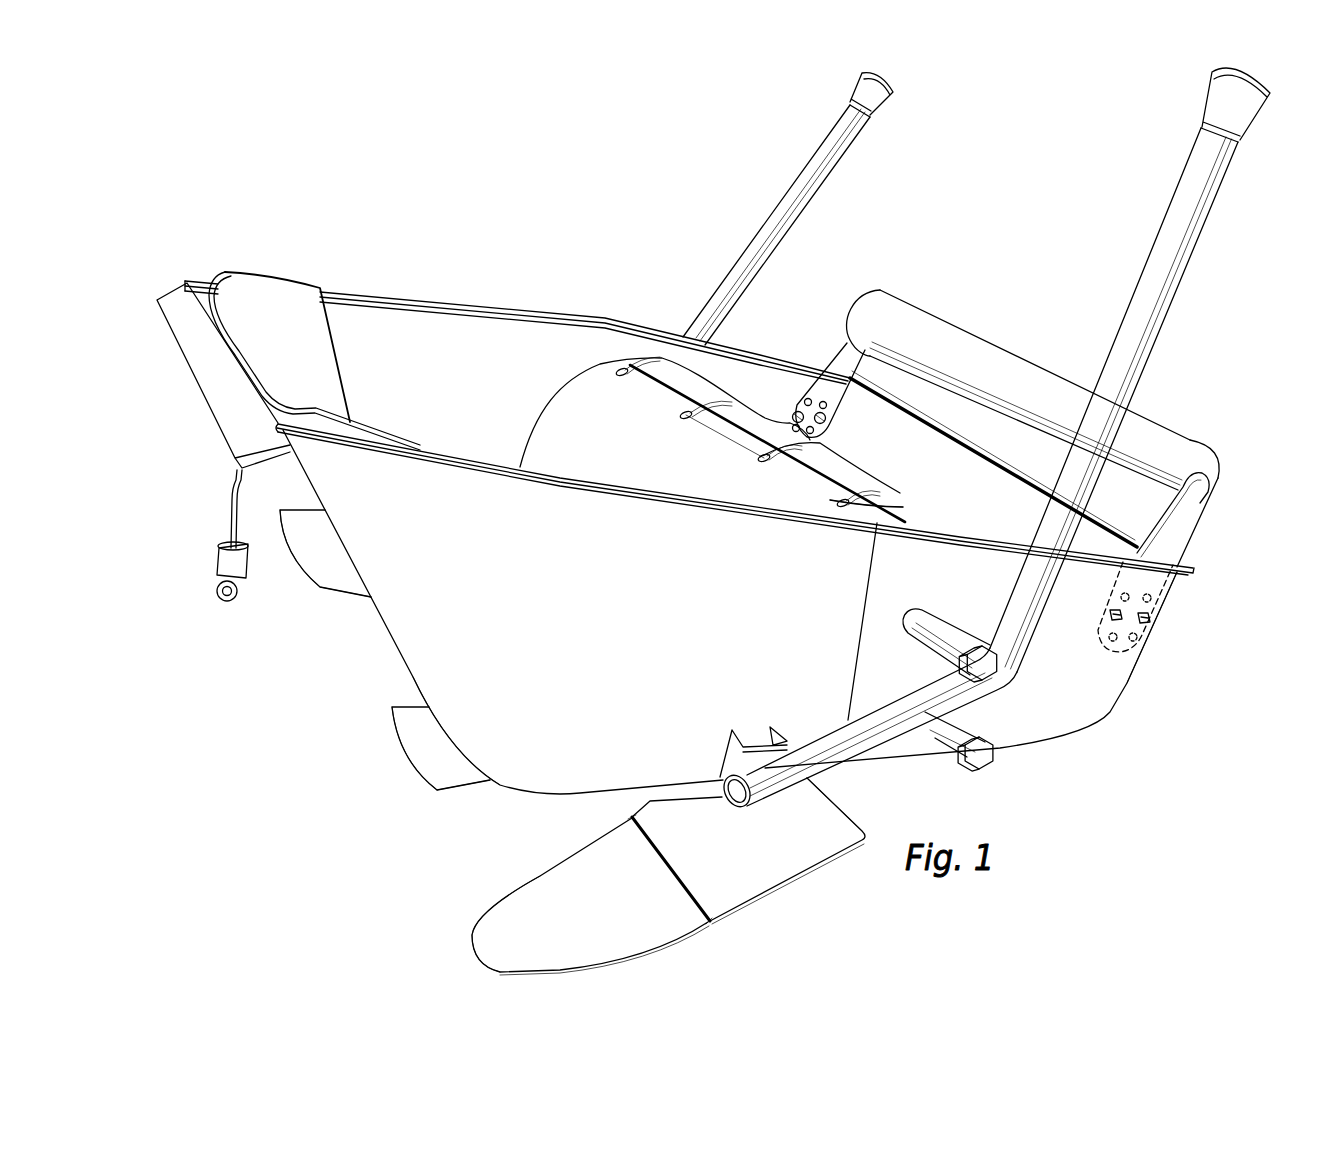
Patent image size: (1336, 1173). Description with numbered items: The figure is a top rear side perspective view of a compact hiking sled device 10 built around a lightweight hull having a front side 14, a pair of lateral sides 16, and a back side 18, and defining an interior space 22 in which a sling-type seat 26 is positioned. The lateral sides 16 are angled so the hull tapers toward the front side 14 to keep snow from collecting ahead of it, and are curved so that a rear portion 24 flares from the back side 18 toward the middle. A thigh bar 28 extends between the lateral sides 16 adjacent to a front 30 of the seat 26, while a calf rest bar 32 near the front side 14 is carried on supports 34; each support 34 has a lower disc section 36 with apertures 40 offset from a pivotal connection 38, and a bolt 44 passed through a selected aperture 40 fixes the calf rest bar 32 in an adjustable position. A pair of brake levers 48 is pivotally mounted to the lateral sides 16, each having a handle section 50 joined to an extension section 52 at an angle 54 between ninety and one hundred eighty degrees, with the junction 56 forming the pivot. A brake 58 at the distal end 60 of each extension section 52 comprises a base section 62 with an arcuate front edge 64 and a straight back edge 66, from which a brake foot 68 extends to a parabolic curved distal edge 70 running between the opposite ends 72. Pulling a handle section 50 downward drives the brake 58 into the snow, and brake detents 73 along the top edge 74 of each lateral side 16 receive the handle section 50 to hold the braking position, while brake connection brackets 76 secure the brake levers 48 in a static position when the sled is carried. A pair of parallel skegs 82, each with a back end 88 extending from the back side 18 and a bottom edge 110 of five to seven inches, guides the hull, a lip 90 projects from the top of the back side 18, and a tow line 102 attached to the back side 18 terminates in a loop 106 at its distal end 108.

The compact hiking sled device 10 is at (495, 255).
The front side 14 is at (1127, 683).
The lateral sides 16 is at (408, 335).
The back side 18 is at (408, 680).
The interior space 22 is at (460, 385).
The rear portion 24 is at (235, 262).
The seat 26 is at (295, 320).
The thigh bar 28 is at (678, 377).
The front of the seat 30 is at (808, 478).
The calf rest bar 32 is at (930, 325).
The supports 34 is at (1180, 513).
The lower disc section 36 is at (795, 402).
The pivotal connection 38 is at (1152, 622).
The apertures 40 is at (823, 401).
The bolt 44 is at (1110, 622).
The brake levers 48 is at (838, 170).
The handle section 50 is at (838, 120).
The extension section 52 is at (870, 730).
The angle 54 is at (980, 632).
The junction 56 is at (1003, 688).
The brake 58 is at (647, 883).
The distal end 60 is at (722, 790).
The base section 62 is at (800, 855).
The front edge 64 is at (833, 803).
The back edge 66 is at (680, 877).
The brake foot 68 is at (650, 923).
The curved distal edge 70 is at (472, 940).
The opposite ends 72 is at (632, 817).
The brake detents 73 is at (905, 517).
The top edge 74 is at (788, 505).
The brake connection brackets 76 is at (730, 735).
The skegs 82 is at (330, 555).
The back end 88 is at (287, 537).
The lip 90 is at (218, 393).
The tow line 102 is at (228, 500).
The loop 106 is at (212, 590).
The distal end 108 is at (225, 603).
The bottom edge 110 is at (348, 595).